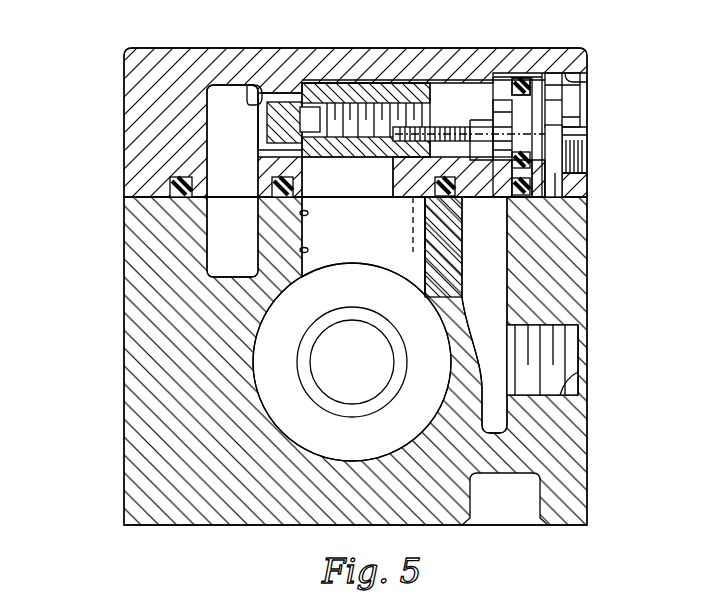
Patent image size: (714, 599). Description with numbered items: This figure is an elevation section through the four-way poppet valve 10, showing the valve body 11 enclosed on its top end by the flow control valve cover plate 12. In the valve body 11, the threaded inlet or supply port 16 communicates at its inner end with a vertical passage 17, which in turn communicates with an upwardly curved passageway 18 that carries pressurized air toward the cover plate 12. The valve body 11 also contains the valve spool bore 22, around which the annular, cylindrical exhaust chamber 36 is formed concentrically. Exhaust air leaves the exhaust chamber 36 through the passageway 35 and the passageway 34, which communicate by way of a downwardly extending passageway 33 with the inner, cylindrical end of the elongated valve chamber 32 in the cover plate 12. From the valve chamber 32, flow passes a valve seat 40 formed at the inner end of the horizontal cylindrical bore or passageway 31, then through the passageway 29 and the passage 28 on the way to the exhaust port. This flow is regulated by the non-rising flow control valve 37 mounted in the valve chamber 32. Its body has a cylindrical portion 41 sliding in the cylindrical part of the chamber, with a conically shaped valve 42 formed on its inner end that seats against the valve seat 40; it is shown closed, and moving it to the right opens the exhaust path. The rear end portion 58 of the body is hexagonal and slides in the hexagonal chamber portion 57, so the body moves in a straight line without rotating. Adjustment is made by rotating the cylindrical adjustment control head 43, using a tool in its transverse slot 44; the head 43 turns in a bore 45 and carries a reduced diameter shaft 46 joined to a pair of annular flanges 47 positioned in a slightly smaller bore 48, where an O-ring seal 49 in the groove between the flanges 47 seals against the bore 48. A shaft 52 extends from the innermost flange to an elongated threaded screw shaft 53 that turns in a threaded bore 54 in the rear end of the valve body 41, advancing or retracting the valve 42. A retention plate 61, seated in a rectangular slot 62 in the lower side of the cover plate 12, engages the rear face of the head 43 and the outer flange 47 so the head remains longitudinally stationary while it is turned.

The four-way poppet valve 10 is at (122, 243).
The valve body 11 is at (140, 287).
The flow control valve cover plate 12 is at (148, 117).
The inlet or supply port 16 is at (578, 388).
The vertical passage 17 is at (505, 357).
The upwardly curved passageway 18 is at (438, 262).
The valve spool bore 22 is at (320, 370).
The passage 28 is at (235, 270).
The passageway 29 is at (222, 96).
The horizontal cylindrical bore or passageway 31 is at (254, 92).
The elongated valve chamber 32 is at (362, 105).
The downwardly extending passageway 33 is at (383, 160).
The passageway 34 is at (300, 213).
The passageway 35 is at (300, 250).
The exhaust chamber 36 is at (333, 262).
The flow control valve 37 is at (580, 92).
The valve seat 40 is at (326, 84).
The valve body cylindrical portion 41 is at (386, 102).
The conically shaped valve 42 is at (284, 100).
The adjustment control head 43 is at (575, 116).
The transverse slot 44 is at (584, 132).
The bore 45 is at (589, 72).
The reduced diameter shaft 46 is at (554, 107).
The annular flanges 47 is at (540, 95).
The bore 48 is at (512, 176).
The O-ring seal 49 is at (512, 86).
The shaft 52 is at (486, 140).
The threaded screw shaft 53 is at (500, 78).
The threaded bore 54 is at (347, 177).
The hexagonal chamber portion 57 is at (522, 77).
The rear end portion 58 is at (414, 84).
The retention plate 61 is at (586, 186).
The rectangular slot 62 is at (560, 203).